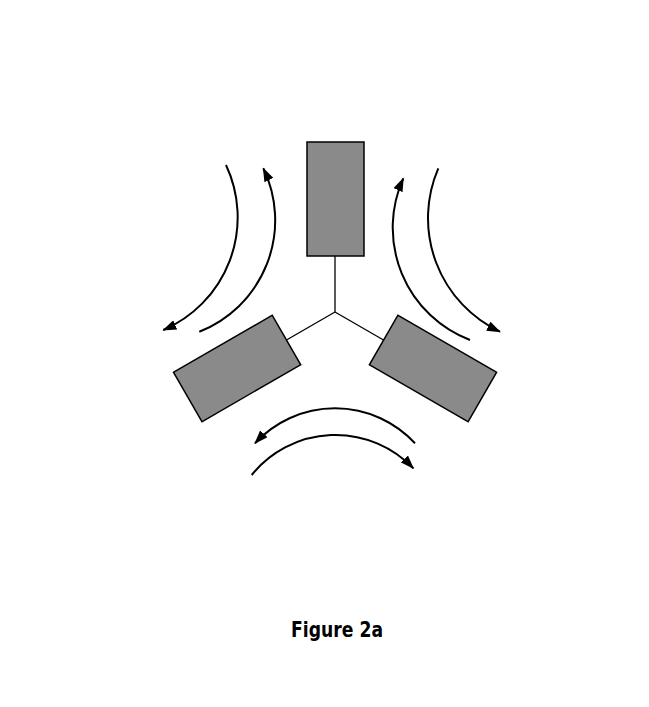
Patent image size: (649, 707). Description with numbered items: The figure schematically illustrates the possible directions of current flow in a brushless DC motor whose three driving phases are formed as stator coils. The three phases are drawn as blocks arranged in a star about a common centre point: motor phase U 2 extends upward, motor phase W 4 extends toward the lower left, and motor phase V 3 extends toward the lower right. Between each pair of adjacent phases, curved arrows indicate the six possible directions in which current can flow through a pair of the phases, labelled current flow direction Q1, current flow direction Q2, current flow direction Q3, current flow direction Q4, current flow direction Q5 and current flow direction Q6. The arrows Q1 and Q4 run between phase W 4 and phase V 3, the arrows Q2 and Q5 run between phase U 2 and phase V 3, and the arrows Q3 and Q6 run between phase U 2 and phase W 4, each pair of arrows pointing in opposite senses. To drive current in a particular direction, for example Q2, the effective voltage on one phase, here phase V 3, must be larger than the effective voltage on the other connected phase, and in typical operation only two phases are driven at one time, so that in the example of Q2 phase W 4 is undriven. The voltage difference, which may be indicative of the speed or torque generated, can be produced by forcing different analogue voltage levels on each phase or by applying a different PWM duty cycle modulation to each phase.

The motor phase U 2 is at (335, 142).
The motor phase V 3 is at (482, 397).
The motor phase W 4 is at (188, 397).
The current flow direction Q1 is at (337, 402).
The current flow direction Q2 is at (403, 282).
The current flow direction Q3 is at (271, 273).
The current flow direction Q4 is at (337, 435).
The current flow direction Q5 is at (443, 273).
The current flow direction Q6 is at (217, 257).